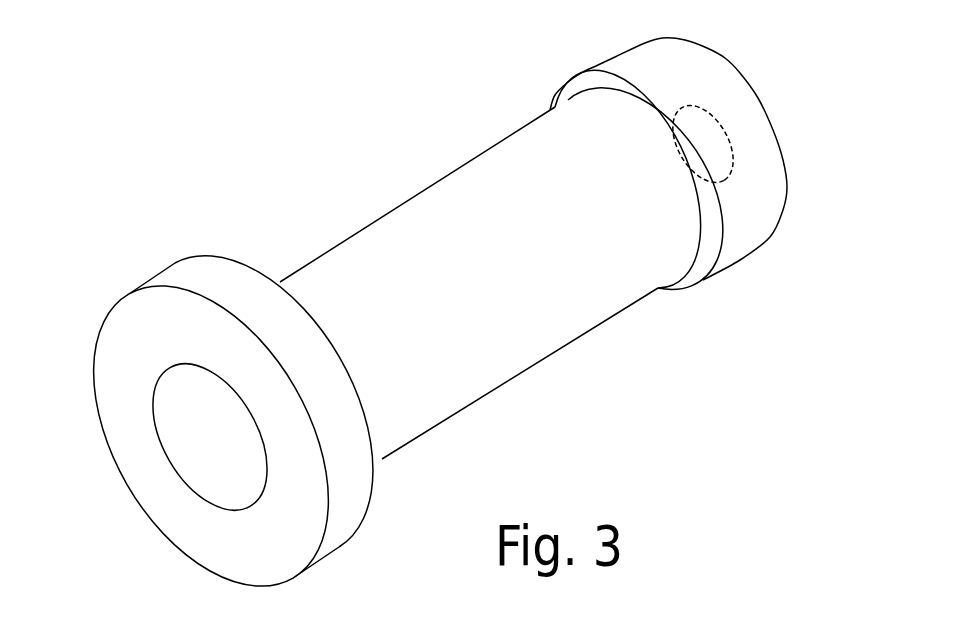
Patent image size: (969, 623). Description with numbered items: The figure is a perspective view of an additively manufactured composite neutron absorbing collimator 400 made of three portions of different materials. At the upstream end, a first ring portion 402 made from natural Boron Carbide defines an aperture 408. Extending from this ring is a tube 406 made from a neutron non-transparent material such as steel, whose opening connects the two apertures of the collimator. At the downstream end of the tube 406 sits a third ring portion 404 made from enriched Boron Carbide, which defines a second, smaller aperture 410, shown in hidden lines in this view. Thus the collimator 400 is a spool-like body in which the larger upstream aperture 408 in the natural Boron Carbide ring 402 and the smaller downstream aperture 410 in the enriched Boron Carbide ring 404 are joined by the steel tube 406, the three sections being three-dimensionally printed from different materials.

The composite neutron absorbing collimator 400 is at (302, 110).
The first ring portion 402 is at (162, 308).
The third ring portion 404 is at (722, 91).
The tube 406 is at (512, 377).
The aperture 408 is at (168, 423).
The second aperture 410 is at (733, 169).